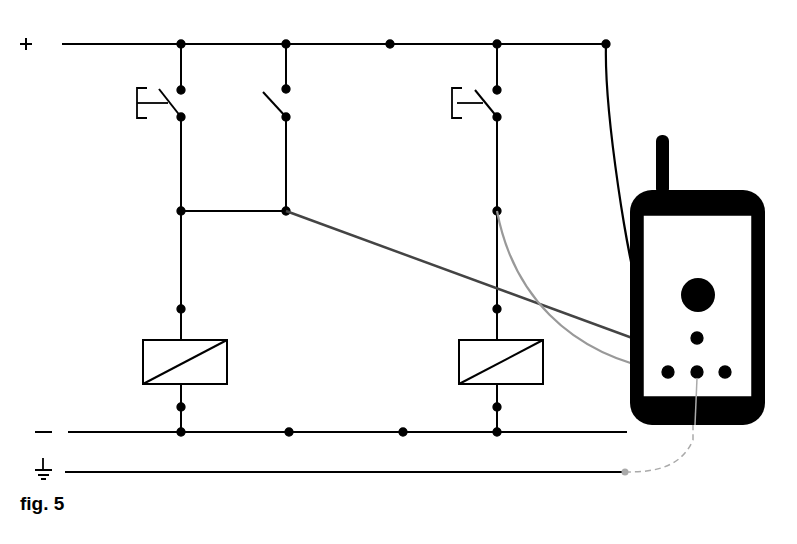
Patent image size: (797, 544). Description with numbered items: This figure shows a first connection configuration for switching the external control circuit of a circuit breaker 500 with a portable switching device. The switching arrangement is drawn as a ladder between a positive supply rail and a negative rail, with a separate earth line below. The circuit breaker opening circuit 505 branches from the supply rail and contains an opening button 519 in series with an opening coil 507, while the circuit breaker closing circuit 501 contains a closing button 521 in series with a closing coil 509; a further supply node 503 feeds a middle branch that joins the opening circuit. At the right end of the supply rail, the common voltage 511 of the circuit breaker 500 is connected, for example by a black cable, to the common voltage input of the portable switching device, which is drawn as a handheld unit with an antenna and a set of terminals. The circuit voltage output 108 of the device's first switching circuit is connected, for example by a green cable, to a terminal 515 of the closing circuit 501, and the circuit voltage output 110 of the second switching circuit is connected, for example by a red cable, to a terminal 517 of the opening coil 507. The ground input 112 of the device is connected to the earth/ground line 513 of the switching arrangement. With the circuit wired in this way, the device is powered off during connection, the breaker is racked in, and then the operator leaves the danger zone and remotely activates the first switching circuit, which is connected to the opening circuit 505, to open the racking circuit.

The circuit voltage output of the first switching circuit 108 is at (707, 353).
The circuit voltage output of the second switching circuit 110 is at (720, 366).
The ground input 112 is at (712, 395).
The circuit breaker 500 is at (323, 258).
The circuit breaker closing circuit 501 is at (504, 59).
The second supply node 503 is at (285, 56).
The opening circuit 505 is at (181, 59).
The opening coil 507 is at (198, 362).
The closing coil 509 is at (515, 362).
The common voltage 511 is at (649, 188).
The ground line 513 is at (379, 450).
The terminal of the closing circuit 515 is at (580, 289).
The terminal of the opening coil 517 is at (503, 288).
The opening button 519 is at (176, 103).
The closing button 521 is at (492, 103).